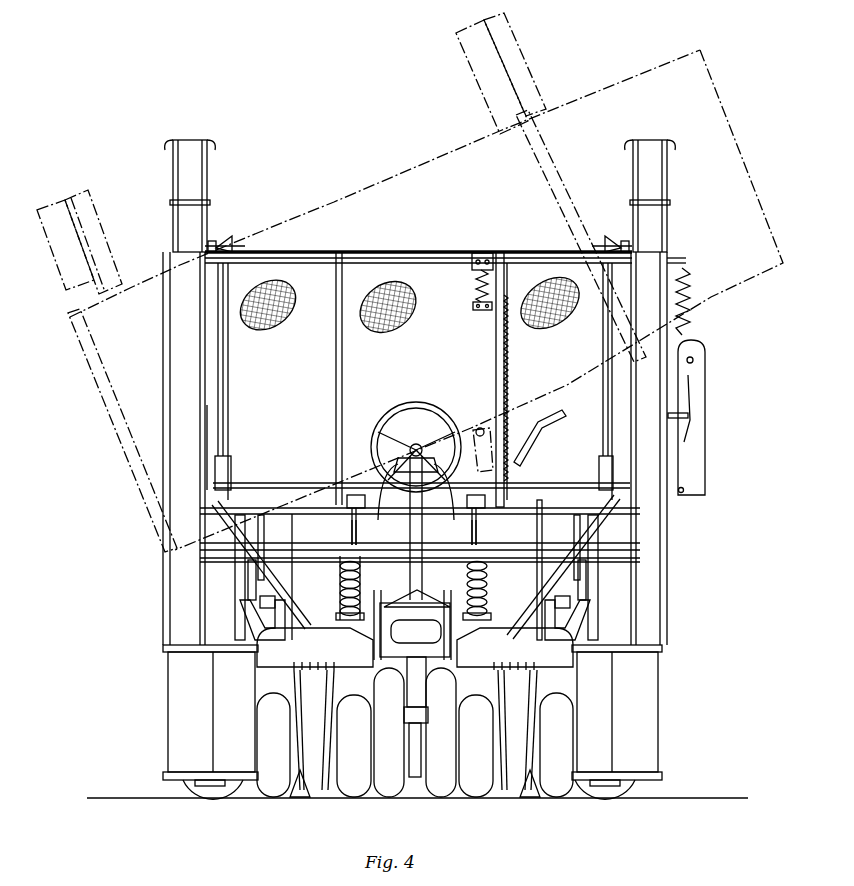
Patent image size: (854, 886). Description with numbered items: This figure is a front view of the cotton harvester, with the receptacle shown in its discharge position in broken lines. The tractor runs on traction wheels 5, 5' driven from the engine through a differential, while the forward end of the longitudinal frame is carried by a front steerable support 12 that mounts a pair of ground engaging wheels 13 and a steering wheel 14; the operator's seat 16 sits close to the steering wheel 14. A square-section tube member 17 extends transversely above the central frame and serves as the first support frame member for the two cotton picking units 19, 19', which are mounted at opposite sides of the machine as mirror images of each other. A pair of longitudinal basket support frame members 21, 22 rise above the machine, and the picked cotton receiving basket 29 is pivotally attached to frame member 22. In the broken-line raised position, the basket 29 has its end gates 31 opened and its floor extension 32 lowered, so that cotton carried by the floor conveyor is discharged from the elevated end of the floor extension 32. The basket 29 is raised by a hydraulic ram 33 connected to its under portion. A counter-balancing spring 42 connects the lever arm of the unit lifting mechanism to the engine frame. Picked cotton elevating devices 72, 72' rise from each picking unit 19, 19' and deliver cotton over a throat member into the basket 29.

The traction wheel 5 is at (605, 804).
The traction wheel 5' is at (213, 806).
The front steerable support 12 is at (410, 686).
The ground engaging wheels 13 is at (423, 796).
The steering wheel 14 is at (419, 410).
The operator's seat 16 is at (376, 528).
The tube member 17 is at (548, 541).
The cotton picking unit 19 is at (617, 712).
The cotton picking unit 19' is at (210, 712).
The basket support frame member 21 is at (542, 502).
The basket support frame member 22 is at (294, 508).
The basket 29 is at (391, 179).
The end gates 31 is at (742, 165).
The floor extension 32 is at (699, 366).
The hydraulic ram 33 is at (515, 620).
The counter-balancing spring 42 is at (340, 596).
The picked cotton elevating device 72 is at (649, 448).
The picked cotton elevating device 72' is at (184, 448).